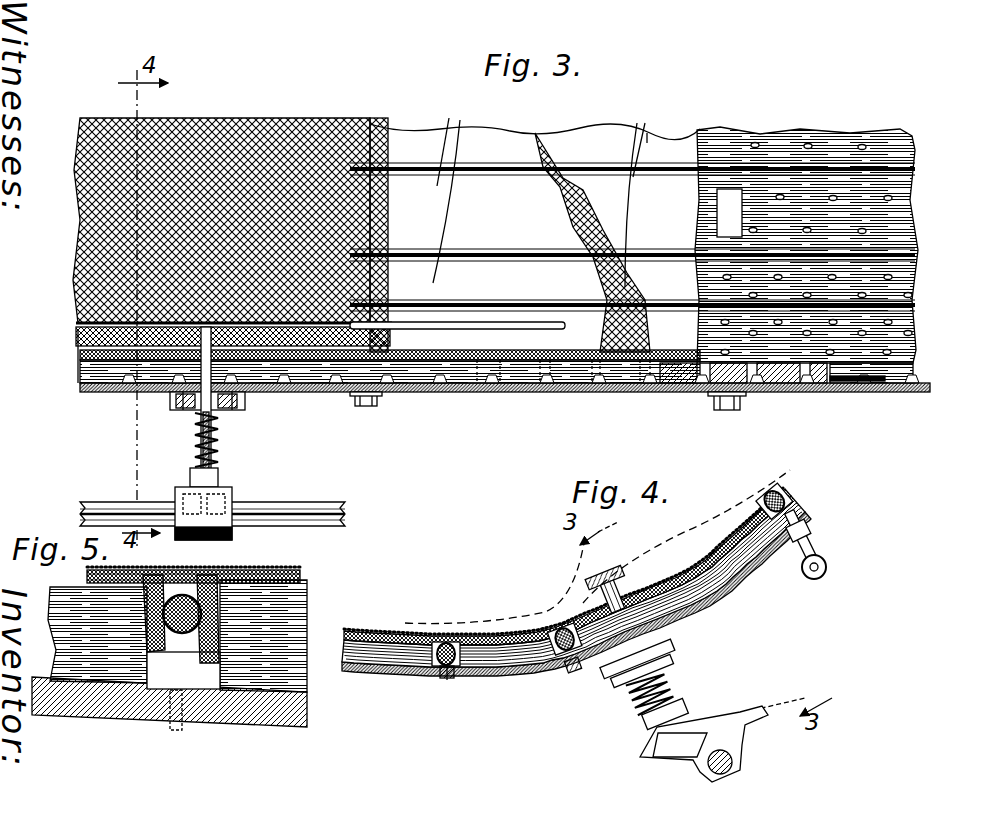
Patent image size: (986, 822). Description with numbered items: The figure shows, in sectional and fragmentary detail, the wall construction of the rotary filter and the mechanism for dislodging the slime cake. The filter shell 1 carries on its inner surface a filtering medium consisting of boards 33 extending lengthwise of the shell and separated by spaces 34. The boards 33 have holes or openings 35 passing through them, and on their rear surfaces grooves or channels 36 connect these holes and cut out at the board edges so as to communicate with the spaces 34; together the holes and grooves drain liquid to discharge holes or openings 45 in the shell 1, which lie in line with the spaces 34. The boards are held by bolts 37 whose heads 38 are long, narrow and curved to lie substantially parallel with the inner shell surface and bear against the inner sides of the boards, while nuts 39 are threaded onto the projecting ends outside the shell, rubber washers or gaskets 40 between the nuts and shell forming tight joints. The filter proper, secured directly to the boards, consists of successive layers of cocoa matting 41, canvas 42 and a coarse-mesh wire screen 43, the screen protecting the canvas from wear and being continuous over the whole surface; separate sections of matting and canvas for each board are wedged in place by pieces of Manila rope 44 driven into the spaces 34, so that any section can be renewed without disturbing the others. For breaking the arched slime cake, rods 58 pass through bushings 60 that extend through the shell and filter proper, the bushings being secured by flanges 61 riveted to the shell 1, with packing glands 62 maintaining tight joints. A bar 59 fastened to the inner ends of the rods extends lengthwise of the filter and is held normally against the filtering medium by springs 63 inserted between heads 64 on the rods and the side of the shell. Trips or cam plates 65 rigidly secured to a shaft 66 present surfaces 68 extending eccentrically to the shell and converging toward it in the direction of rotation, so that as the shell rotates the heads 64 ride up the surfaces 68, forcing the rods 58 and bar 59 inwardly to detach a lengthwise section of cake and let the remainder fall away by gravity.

In FIG. 3, the filter shell 1 is at (506, 393).
In FIG. 4, the filter shell 1 is at (400, 671).
In FIG. 5, the filter shell 1 is at (296, 726).
In FIG. 3, the boards 33 is at (912, 197).
In FIG. 4, the boards 33 is at (380, 665).
In FIG. 5, the boards 33 is at (76, 587).
In FIG. 3, the spaces 34 is at (918, 283).
In FIG. 4, the spaces 34 is at (444, 678).
In FIG. 5, the spaces 34 is at (163, 673).
In FIG. 3, the holes or openings 35 is at (886, 200).
In FIG. 3, the grooves or channels 36 is at (490, 392).
In FIG. 3, the bolts 37 is at (366, 406).
In FIG. 3, the heads 38 is at (727, 207).
In FIG. 3, the nuts 39 is at (378, 397).
In FIG. 3, the rubber washers or gaskets 40 is at (388, 392).
In FIG. 3, the cocoa matting layer 41 is at (635, 191).
In FIG. 4, the cocoa matting layer 41 is at (795, 503).
In FIG. 5, the cocoa matting layer 41 is at (295, 584).
In FIG. 3, the canvas layer 42 is at (438, 189).
In FIG. 4, the canvas layer 42 is at (785, 498).
In FIG. 5, the canvas layer 42 is at (295, 575).
In FIG. 3, the wire screen 43 is at (280, 107).
In FIG. 4, the wire screen 43 is at (760, 505).
In FIG. 5, the wire screen 43 is at (268, 568).
In FIG. 3, the pieces of Manila rope 44 is at (877, 386).
In FIG. 4, the pieces of Manila rope 44 is at (463, 667).
In FIG. 5, the pieces of Manila rope 44 is at (182, 640).
In FIG. 4, the discharge holes or openings 45 is at (812, 520).
In FIG. 5, the discharge holes or openings 45 is at (172, 730).
In FIG. 3, the rods 58 is at (214, 414).
In FIG. 4, the rods 58 is at (648, 560).
In FIG. 3, the bar 59 is at (492, 313).
In FIG. 4, the bar 59 is at (594, 577).
In FIG. 3, the bushings 60 is at (155, 392).
In FIG. 3, the flanges 61 is at (246, 398).
In FIG. 4, the flanges 61 is at (622, 660).
In FIG. 3, the packing glands 62 is at (200, 440).
In FIG. 4, the packing glands 62 is at (632, 686).
In FIG. 3, the springs 63 is at (220, 455).
In FIG. 4, the springs 63 is at (668, 672).
In FIG. 3, the heads 64 is at (195, 476).
In FIG. 3, the trips or cam plates 65 is at (234, 492).
In FIG. 4, the trips or cam plates 65 is at (738, 716).
In FIG. 3, the shaft 66 is at (352, 506).
In FIG. 4, the shaft 66 is at (733, 756).
In FIG. 4, the surfaces 68 is at (706, 718).